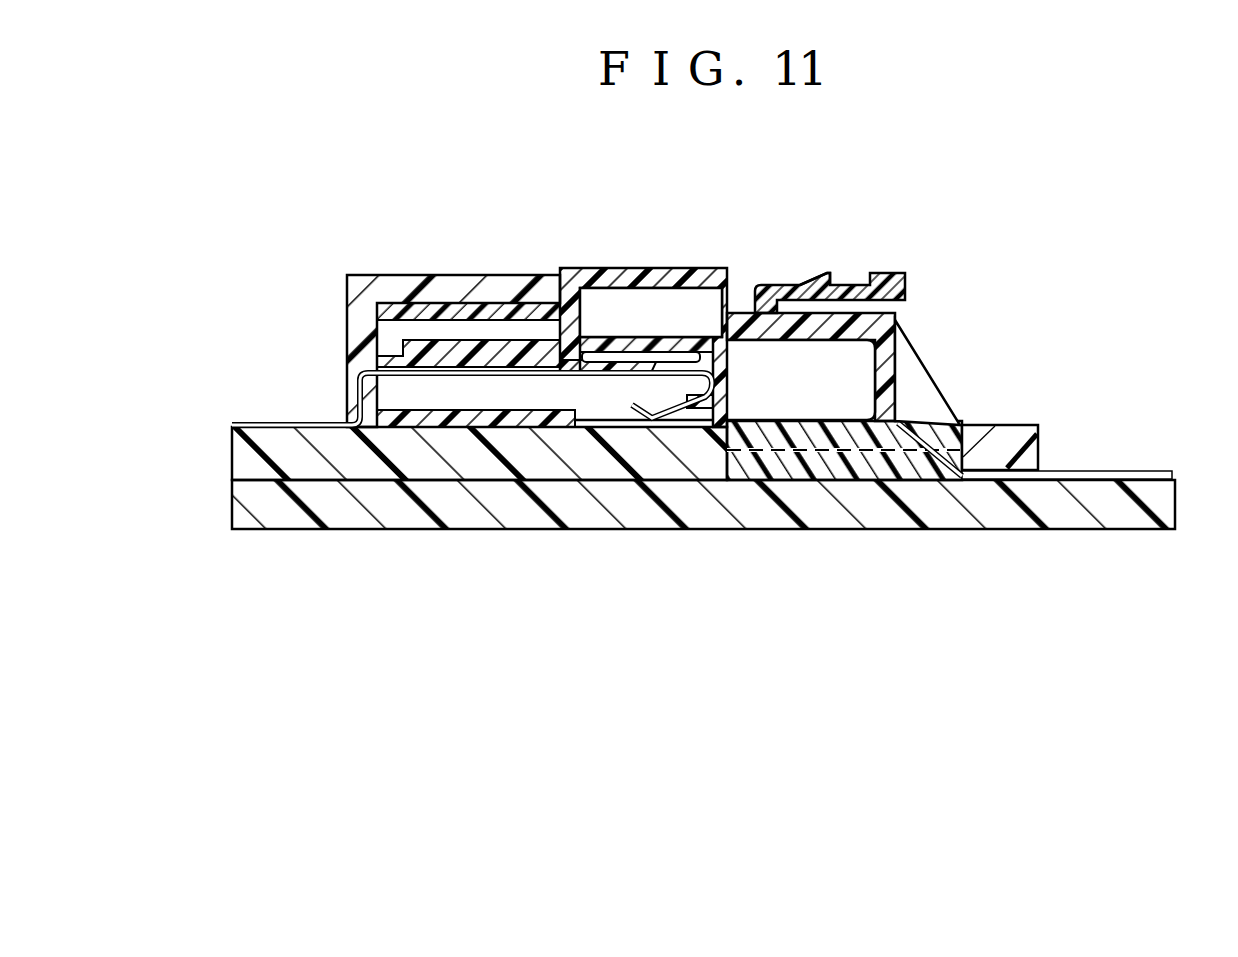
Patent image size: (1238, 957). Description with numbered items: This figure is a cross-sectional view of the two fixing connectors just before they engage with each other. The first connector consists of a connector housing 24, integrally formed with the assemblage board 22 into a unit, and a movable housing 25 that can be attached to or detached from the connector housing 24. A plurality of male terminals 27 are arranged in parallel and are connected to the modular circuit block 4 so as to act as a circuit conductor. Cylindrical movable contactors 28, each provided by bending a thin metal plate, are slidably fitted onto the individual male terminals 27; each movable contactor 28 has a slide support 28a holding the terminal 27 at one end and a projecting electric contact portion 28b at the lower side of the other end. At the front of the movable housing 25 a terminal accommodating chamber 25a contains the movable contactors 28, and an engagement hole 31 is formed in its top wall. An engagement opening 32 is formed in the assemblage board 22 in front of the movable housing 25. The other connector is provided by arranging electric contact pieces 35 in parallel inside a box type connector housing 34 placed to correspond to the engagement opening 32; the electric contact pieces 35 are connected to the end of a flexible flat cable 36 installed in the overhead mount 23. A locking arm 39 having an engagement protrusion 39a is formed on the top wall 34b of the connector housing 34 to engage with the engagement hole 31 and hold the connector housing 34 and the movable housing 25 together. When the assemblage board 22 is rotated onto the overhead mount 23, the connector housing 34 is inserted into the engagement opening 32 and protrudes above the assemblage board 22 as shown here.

The modular circuit block 4 is at (298, 423).
The assemblage board 22 is at (1023, 418).
The overhead mount 23 is at (963, 533).
The connector housing 24 is at (383, 264).
The movable housing 25 is at (590, 262).
The terminal accommodating chamber 25a is at (708, 338).
The male terminals 27 is at (505, 355).
The movable contactors 28 is at (463, 385).
The slide support 28a is at (397, 358).
The electric contact portion 28b is at (667, 410).
The engagement hole 31 is at (673, 277).
The engagement opening 32 is at (927, 478).
The connector housing 34 is at (948, 380).
The top wall 34b is at (883, 313).
The electric contact pieces 35 is at (780, 418).
The flexible flat cable 36 is at (1130, 472).
The locking arm 39 is at (862, 280).
The engagement protrusion 39a is at (830, 275).